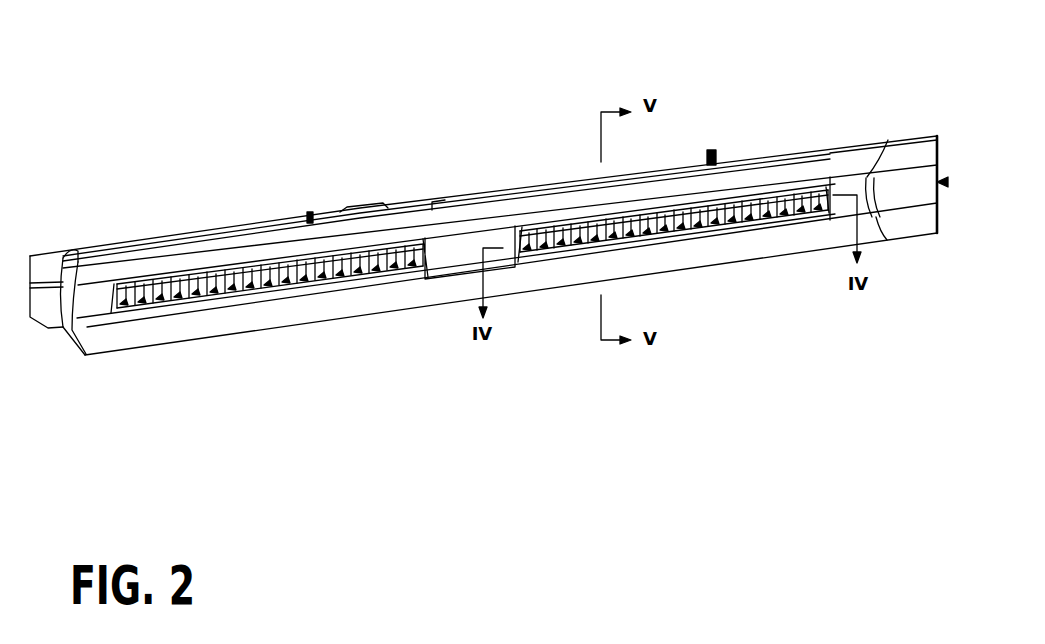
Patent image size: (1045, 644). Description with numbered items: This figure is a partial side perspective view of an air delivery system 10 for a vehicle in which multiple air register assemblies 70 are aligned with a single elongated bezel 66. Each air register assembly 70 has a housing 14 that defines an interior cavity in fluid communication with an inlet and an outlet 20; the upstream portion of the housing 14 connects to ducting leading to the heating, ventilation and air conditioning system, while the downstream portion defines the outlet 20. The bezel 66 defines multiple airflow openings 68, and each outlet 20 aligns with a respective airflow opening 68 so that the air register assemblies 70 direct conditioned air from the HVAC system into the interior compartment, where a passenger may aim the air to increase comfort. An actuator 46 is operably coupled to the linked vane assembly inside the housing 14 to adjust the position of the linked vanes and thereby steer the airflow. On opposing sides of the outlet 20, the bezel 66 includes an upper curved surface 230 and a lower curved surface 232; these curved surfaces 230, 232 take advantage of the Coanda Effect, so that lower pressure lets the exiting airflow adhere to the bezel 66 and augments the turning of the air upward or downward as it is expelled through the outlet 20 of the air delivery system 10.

The air delivery system 10 is at (752, 112).
The housing 14 is at (44, 278).
The outlet 20 is at (224, 295).
The actuator 46 is at (65, 328).
The bezel 66 is at (848, 167).
The airflow openings 68 is at (262, 294).
The air register assemblies 70 is at (599, 219).
The upper curved surface 230 is at (233, 247).
The lower curved surface 232 is at (180, 330).